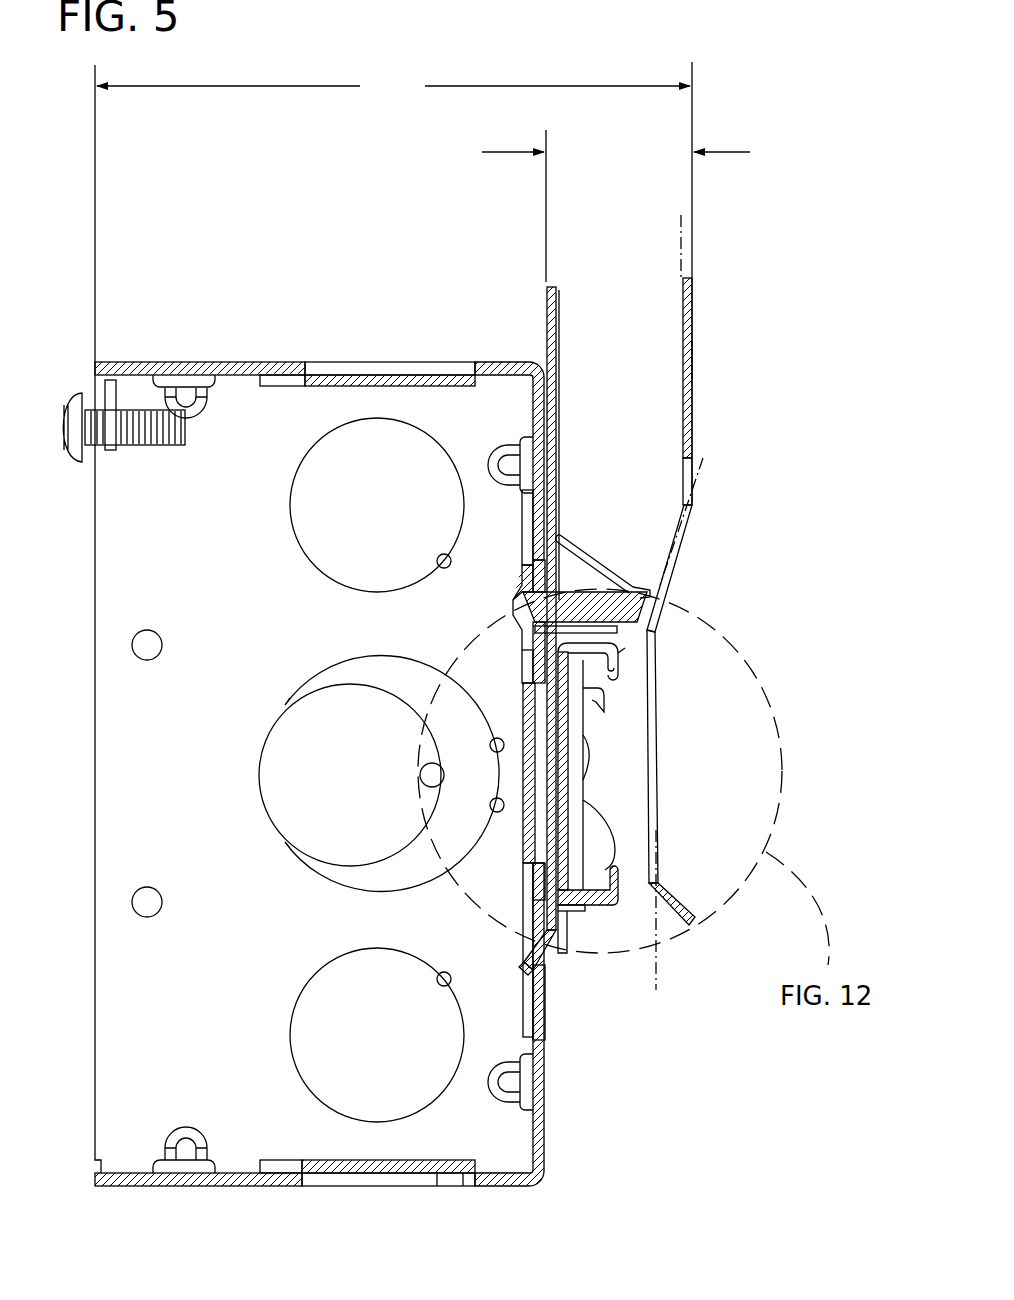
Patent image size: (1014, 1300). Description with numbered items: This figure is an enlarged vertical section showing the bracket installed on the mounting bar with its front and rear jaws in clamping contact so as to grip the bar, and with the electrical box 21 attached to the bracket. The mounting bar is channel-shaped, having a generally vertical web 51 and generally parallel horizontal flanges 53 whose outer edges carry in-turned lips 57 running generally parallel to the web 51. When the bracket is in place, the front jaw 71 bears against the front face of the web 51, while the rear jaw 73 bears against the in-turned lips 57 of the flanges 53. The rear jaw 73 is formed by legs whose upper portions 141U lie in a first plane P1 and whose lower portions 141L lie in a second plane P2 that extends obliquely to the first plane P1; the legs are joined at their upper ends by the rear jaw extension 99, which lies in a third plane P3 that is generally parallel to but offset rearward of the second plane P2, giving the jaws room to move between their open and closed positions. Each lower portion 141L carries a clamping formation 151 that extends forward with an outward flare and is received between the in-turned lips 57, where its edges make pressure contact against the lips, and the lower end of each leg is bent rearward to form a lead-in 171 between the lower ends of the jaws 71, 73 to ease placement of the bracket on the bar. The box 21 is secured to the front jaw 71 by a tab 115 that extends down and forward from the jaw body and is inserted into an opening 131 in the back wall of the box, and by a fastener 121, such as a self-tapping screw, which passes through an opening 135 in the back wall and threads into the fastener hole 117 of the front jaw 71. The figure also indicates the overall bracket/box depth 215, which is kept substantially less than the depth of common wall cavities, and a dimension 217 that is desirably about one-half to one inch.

The electrical box 21 is at (165, 360).
The overall bracket/box depth 215 is at (394, 283).
The dimension 217 is at (616, 206).
The front jaw 71 is at (553, 287).
The rear jaw 73 is at (694, 319).
The third plane P3 is at (688, 228).
The rear jaw extension 99 is at (692, 358).
The first plane P1 is at (706, 468).
The second plane P2 is at (662, 982).
The fastener 121 is at (593, 602).
The upper portions of legs 141U is at (655, 612).
The lower portions of legs 141L is at (653, 810).
The opening 135 is at (515, 605).
The fastener hole 117 is at (614, 628).
The in-turned lips 57 is at (628, 650).
The flanges 53 is at (603, 690).
The clamping formation 151 is at (593, 732).
The web 51 is at (580, 785).
The opening 131 is at (553, 926).
The lead-in 171 is at (697, 918).
The tab 115 is at (535, 968).